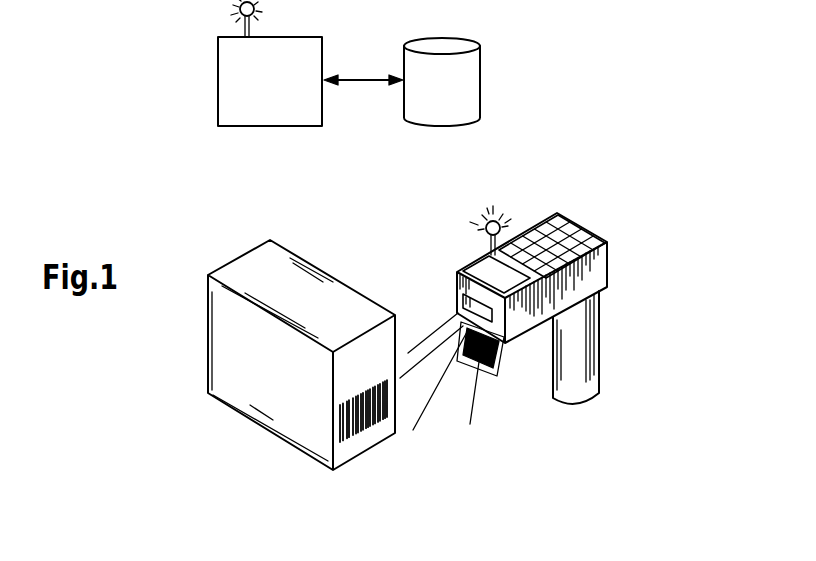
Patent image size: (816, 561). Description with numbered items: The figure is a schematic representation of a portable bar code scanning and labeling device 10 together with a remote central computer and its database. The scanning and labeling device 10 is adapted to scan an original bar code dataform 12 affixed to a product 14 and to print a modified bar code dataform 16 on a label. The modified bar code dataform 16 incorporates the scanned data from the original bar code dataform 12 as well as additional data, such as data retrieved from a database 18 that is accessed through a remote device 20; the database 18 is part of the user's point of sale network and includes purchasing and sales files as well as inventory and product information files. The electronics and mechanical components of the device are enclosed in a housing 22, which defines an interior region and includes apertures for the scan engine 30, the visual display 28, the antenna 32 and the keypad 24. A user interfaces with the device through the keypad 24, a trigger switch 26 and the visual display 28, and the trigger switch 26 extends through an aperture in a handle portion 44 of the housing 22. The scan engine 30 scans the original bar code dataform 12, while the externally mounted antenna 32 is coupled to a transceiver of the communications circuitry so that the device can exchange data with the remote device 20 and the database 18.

The bar code scanning and labeling device 10 is at (628, 365).
The original bar code dataform 12 is at (387, 417).
The product 14 is at (322, 412).
The modified bar code dataform 16 is at (461, 357).
The database 18 is at (475, 78).
The remote device 20 is at (298, 114).
The housing 22 is at (588, 272).
The keypad 24 is at (557, 235).
The trigger switch 26 is at (547, 318).
The visual display 28 is at (482, 268).
The scan engine 30 is at (456, 279).
The antenna 32 is at (482, 238).
The handle portion 44 is at (578, 383).